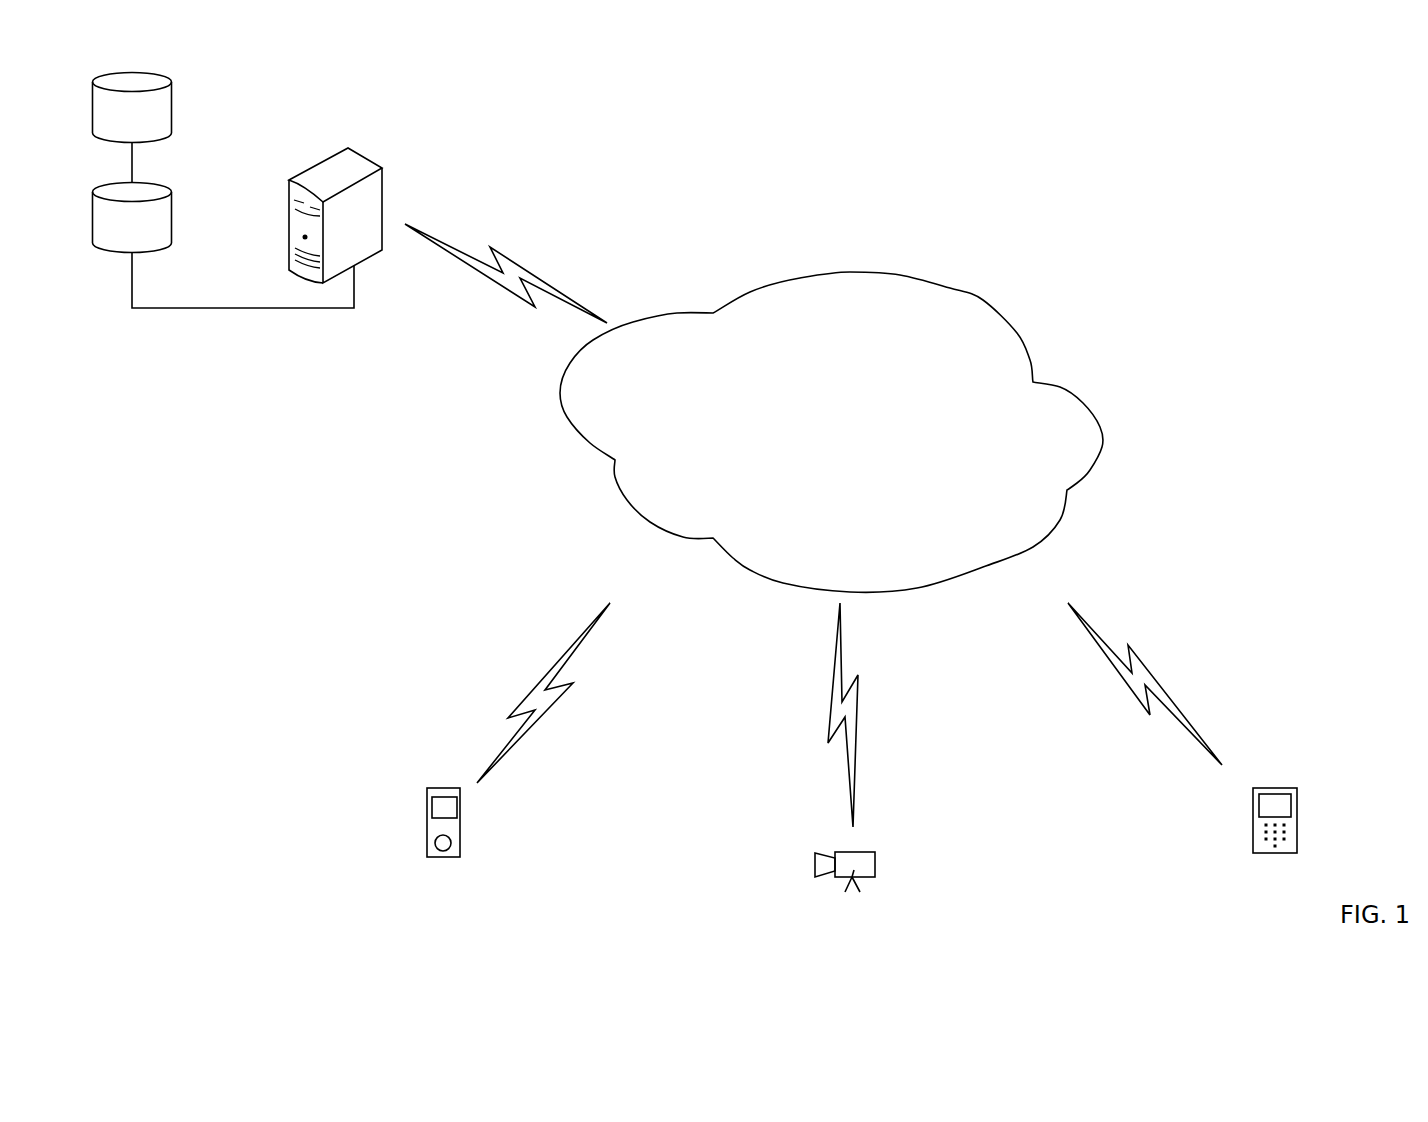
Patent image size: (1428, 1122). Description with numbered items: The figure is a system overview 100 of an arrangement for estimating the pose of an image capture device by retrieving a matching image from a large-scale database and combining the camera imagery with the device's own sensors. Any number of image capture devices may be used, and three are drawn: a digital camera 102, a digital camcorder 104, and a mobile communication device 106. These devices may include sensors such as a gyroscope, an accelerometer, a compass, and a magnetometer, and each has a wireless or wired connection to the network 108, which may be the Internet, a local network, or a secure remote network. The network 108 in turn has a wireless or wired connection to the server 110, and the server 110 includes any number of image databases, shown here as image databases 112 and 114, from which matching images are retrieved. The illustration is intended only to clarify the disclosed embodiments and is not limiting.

The system overview 100 is at (1233, 152).
The digital camera 102 is at (462, 828).
The digital camcorder 104 is at (876, 866).
The mobile communication device 106 is at (1297, 826).
The network 108 is at (846, 446).
The server 110 is at (386, 208).
The image database 112 is at (172, 115).
The image database 114 is at (172, 224).